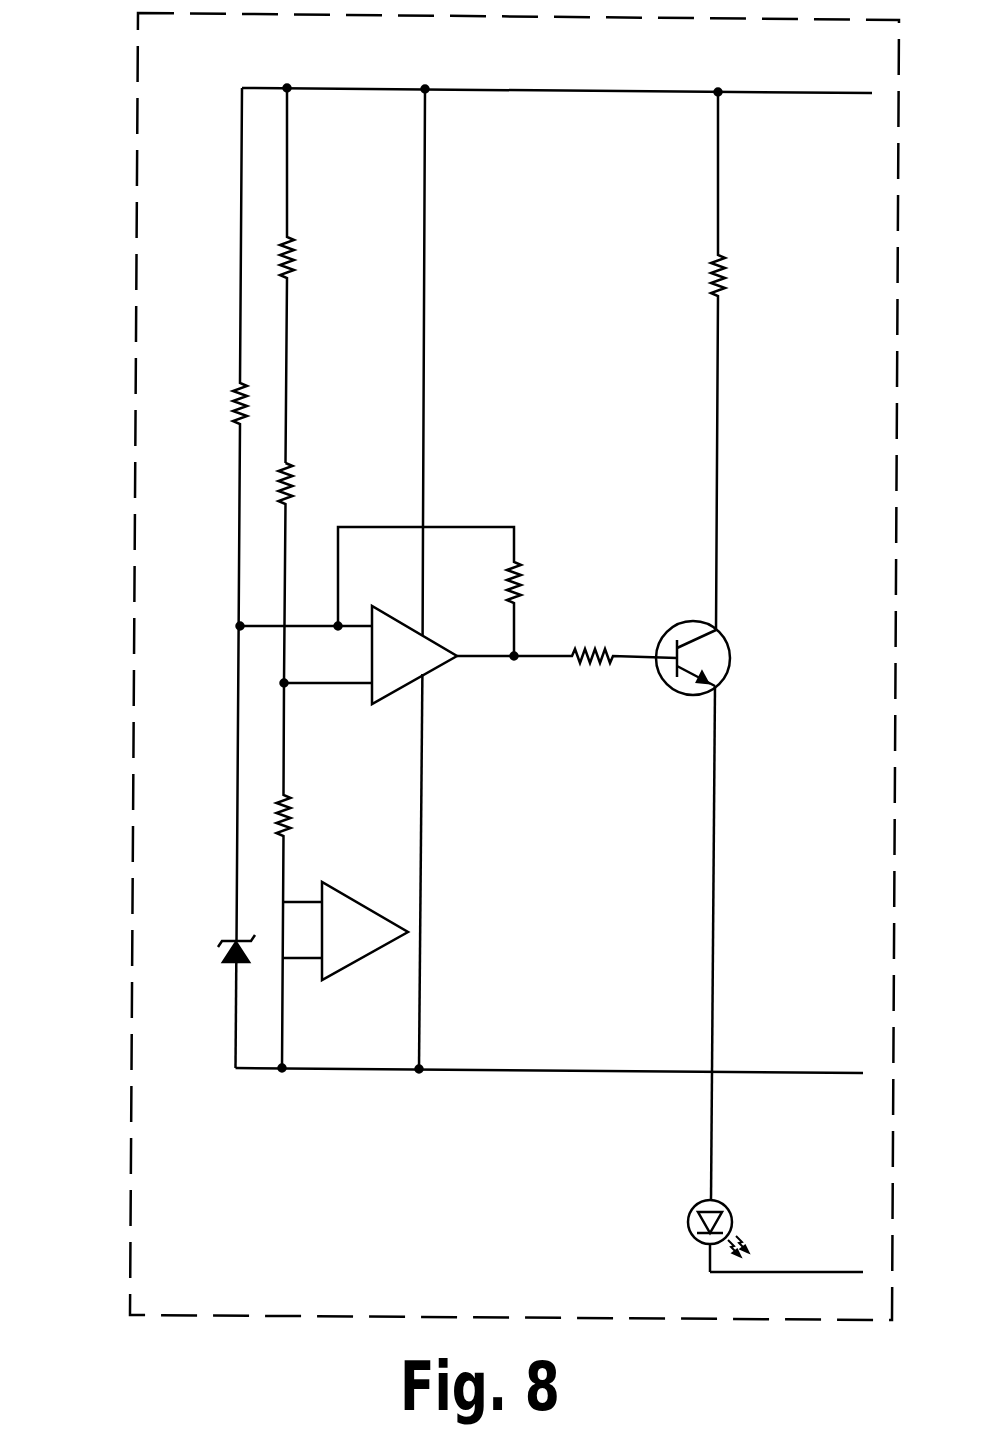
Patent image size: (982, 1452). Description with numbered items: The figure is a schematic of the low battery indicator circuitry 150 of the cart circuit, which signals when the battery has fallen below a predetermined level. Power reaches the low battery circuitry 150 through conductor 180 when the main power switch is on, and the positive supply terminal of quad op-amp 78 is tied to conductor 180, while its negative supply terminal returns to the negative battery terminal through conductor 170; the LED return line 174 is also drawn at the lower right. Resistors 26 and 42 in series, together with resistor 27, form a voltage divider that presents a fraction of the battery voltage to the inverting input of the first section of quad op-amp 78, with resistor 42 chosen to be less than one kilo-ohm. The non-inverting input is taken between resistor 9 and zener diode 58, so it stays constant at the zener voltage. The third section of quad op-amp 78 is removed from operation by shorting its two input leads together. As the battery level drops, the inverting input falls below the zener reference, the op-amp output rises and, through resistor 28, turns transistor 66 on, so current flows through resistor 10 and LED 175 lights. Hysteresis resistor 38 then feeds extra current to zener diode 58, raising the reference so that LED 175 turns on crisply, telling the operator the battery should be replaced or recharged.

The low battery indicator circuitry 150 is at (105, 146).
The conductor 180 is at (857, 95).
The resistor 9 is at (234, 407).
The resistor 26 is at (296, 264).
The resistor 42 is at (293, 481).
The resistor 27 is at (291, 824).
The quad op-amp 78 is at (392, 606).
The hysteresis resistor 38 is at (510, 589).
The resistor 28 is at (606, 663).
The resistor 10 is at (724, 287).
The transistor 66 is at (690, 695).
The zener diode 58 is at (235, 968).
The conductor 170 is at (843, 1075).
The LED 175 is at (690, 1237).
The LED return line 174 is at (822, 1273).